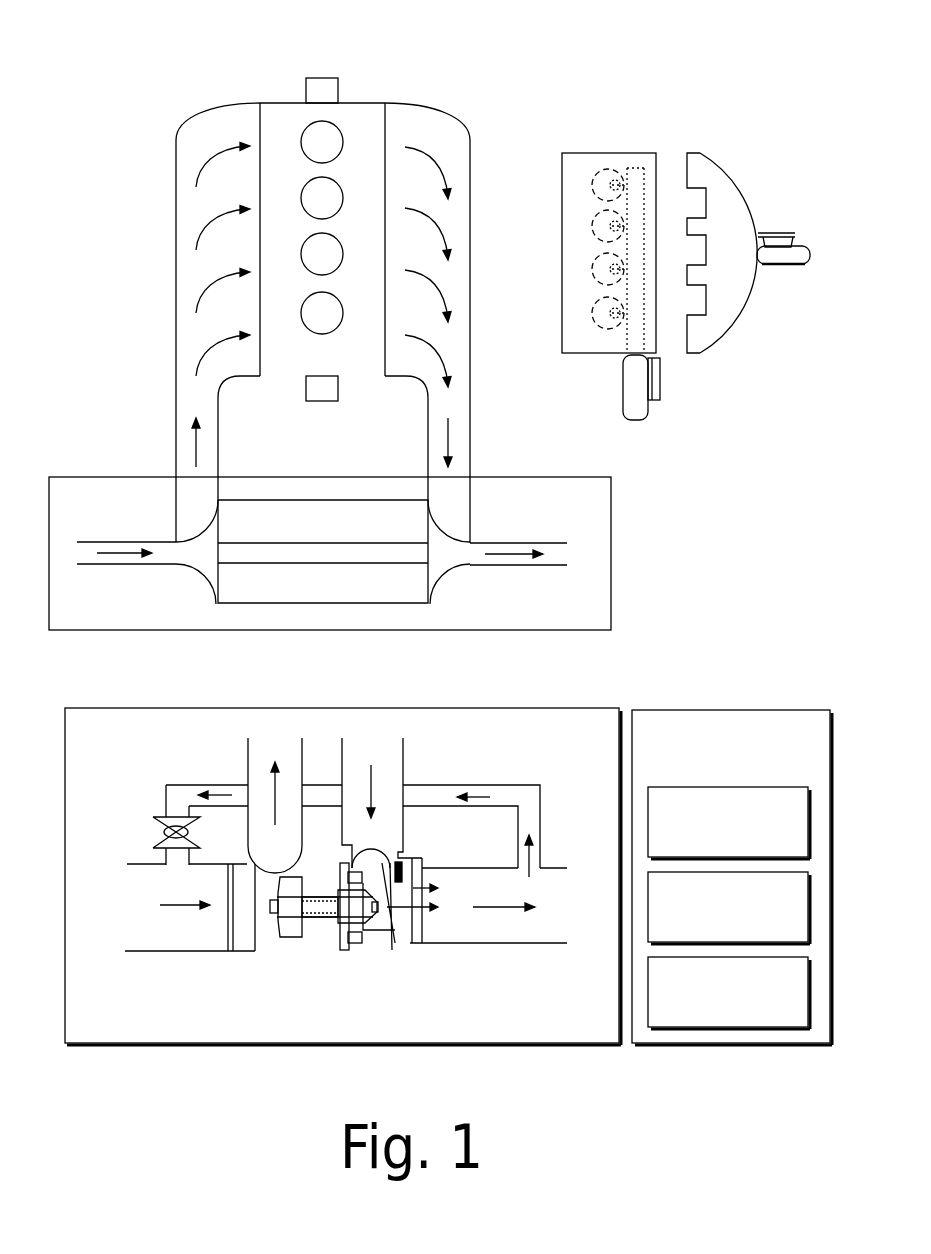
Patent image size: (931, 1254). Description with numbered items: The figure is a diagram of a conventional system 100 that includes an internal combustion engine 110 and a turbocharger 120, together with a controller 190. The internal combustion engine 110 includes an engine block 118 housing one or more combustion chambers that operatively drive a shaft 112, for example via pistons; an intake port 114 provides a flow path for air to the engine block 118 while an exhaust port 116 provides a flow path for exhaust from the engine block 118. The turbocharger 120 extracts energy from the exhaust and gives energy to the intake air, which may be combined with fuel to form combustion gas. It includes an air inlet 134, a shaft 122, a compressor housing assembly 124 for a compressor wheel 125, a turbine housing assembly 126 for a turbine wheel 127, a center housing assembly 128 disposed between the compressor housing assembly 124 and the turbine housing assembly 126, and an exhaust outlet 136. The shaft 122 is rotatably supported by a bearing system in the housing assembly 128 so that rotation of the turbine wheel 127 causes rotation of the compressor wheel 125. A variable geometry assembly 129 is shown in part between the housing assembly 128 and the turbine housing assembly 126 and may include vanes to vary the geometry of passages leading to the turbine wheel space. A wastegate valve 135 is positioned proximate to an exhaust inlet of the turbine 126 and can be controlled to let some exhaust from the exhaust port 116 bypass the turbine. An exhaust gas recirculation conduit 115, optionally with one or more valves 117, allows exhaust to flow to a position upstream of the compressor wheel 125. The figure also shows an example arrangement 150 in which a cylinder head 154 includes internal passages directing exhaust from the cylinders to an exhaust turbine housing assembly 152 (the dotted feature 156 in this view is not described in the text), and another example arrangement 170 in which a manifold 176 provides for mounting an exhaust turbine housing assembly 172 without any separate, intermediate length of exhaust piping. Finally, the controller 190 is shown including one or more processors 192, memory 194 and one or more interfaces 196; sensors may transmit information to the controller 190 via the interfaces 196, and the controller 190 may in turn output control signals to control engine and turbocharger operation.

The system 100 is at (462, 56).
The internal combustion engine 110 is at (290, 103).
The shaft 112 is at (323, 78).
The intake port 114 is at (193, 120).
The exhaust gas recirculation (EGR) conduit 115 is at (177, 785).
The exhaust port 116 is at (450, 120).
The valve 117 is at (160, 817).
The engine block 118 is at (323, 375).
The turbocharger 120 is at (518, 477).
The shaft 122 is at (320, 565).
The compressor housing assembly 124 is at (200, 573).
The compressor wheel 125 is at (275, 960).
The turbine housing assembly 126 is at (446, 570).
The turbine wheel 127 is at (395, 950).
The center housing assembly 128 is at (353, 1028).
The variable geometry assembly 129 is at (333, 947).
The air inlet 134 is at (143, 542).
The wastegate valve 135 is at (402, 860).
The exhaust outlet 136 is at (520, 543).
The arrangement 150 is at (604, 135).
The exhaust turbine housing assembly 152 is at (623, 380).
The cylinder head 154 is at (562, 232).
The camshaft / rail 156 is at (639, 168).
The arrangement 170 is at (740, 145).
The exhaust turbine housing assembly 172 is at (778, 267).
The manifold 176 is at (740, 312).
The controller 190 is at (712, 773).
The processor 192 is at (712, 841).
The memory 194 is at (712, 928).
The interface 196 is at (712, 1013).